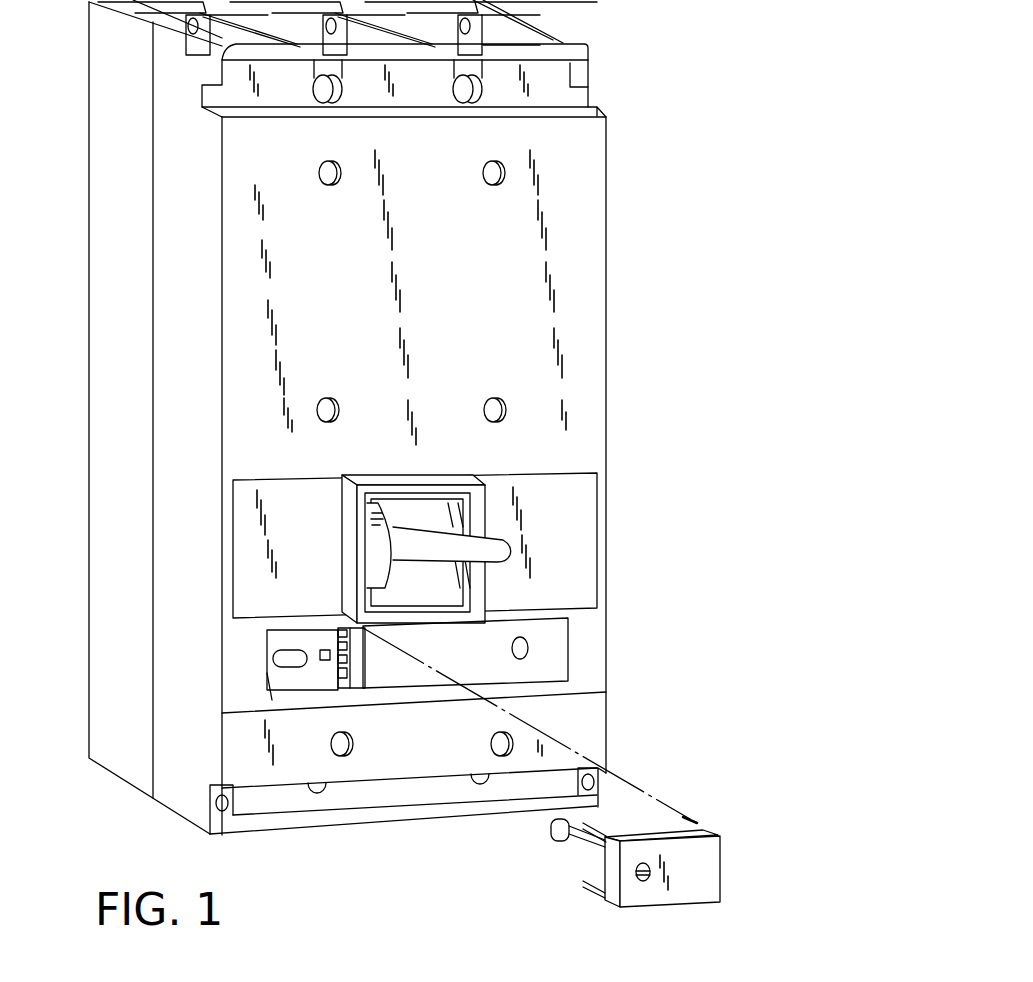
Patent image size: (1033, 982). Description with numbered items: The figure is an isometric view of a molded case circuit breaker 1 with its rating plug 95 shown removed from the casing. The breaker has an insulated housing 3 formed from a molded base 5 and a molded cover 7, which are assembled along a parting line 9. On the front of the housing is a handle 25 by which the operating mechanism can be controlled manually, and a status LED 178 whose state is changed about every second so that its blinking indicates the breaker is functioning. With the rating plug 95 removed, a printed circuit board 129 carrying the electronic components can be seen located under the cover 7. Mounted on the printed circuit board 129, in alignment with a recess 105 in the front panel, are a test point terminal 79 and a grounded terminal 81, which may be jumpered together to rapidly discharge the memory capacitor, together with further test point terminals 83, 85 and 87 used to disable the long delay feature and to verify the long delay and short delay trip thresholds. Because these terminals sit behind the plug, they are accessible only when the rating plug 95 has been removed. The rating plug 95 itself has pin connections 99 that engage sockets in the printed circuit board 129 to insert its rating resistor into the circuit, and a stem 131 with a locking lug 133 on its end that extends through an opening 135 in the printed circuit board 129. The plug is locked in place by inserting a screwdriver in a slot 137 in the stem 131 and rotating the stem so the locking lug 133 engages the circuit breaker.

The molded case circuit breaker 1 is at (731, 329).
The insulated housing 3 is at (614, 219).
The molded base 5 is at (112, 336).
The molded cover 7 is at (582, 452).
The parting line 9 is at (153, 400).
The handle 25 is at (490, 540).
The test point terminal 79 is at (323, 652).
The grounded terminal 81 is at (341, 633).
The test point terminal 83 is at (353, 645).
The test point terminal 85 is at (350, 662).
The test point terminal 87 is at (346, 672).
The rating plug 95 is at (712, 907).
The pin connections 99 is at (583, 823).
The recess 105 is at (322, 695).
The printed circuit board 129 is at (315, 675).
The stem 131 is at (600, 848).
The locking lug 133 is at (592, 826).
The opening 135 is at (265, 653).
The slot 137 is at (644, 884).
The status LED 178 is at (528, 650).